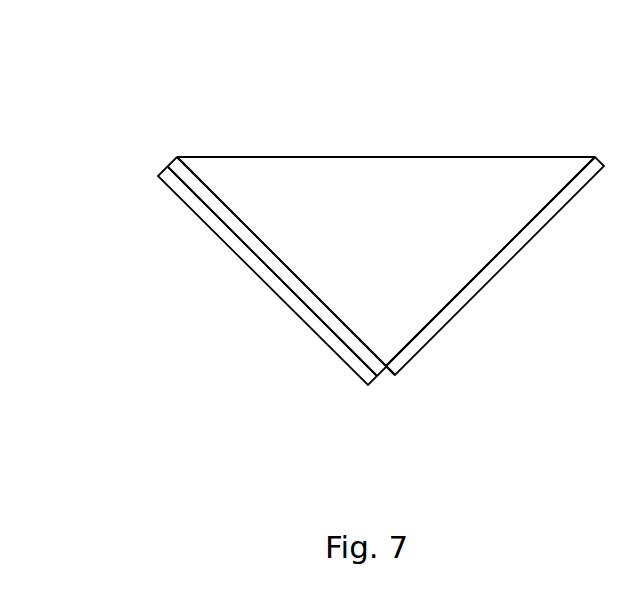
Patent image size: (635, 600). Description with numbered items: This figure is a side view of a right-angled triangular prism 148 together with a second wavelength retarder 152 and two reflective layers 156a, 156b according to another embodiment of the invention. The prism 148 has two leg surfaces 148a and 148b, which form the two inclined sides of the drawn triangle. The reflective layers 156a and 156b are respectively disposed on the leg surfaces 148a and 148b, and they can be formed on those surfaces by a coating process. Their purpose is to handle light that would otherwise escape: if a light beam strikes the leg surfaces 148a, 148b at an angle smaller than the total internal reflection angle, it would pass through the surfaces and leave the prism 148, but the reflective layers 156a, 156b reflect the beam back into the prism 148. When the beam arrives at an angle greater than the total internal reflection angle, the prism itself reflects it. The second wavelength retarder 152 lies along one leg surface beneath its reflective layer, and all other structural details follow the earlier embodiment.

The right-angled triangular prism 148 is at (404, 185).
The leg surface 148a is at (218, 186).
The leg surface 148b is at (570, 172).
The second wavelength retarder 152 is at (302, 313).
The reflective layer 156a is at (257, 264).
The reflective layer 156b is at (497, 267).